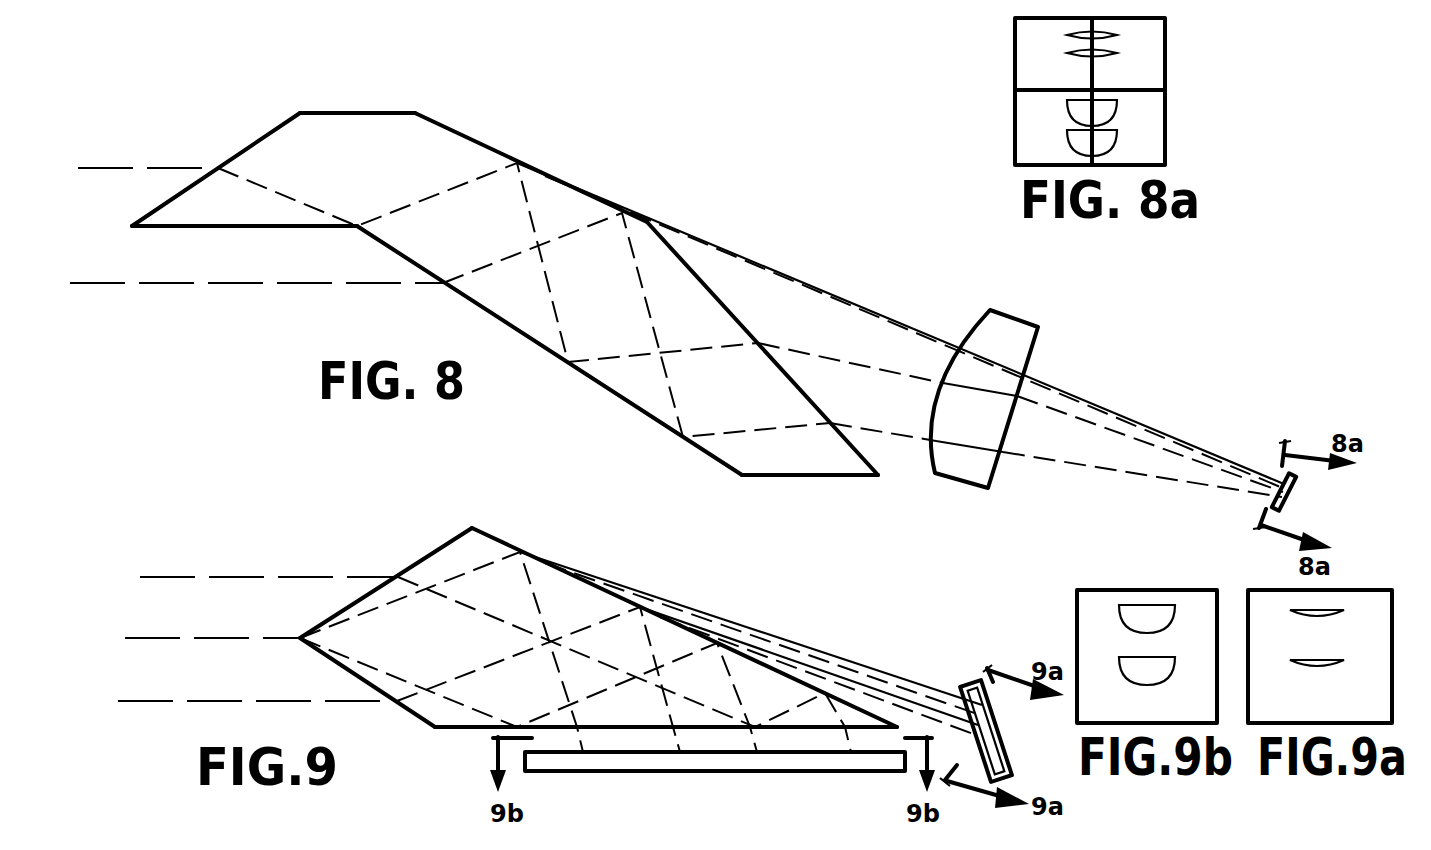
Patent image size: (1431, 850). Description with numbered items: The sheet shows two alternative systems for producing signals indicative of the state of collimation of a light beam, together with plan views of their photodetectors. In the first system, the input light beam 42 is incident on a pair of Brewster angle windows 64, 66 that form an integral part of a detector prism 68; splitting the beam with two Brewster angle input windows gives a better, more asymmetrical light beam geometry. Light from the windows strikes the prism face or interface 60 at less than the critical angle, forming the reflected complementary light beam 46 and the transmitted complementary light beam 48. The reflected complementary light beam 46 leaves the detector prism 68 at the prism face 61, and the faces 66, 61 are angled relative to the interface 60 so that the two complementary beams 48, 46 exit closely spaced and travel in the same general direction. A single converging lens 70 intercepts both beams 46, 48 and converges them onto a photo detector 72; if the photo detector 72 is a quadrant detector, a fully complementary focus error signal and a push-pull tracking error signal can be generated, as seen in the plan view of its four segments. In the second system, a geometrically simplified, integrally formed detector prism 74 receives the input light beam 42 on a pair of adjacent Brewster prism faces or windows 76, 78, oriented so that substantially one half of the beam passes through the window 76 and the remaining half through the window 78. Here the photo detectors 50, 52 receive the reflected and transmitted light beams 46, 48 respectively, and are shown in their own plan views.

In FIG. 8, the input light beam 42 is at (176, 167).
In FIG. 9, the input light beam 42 is at (243, 574).
In FIG. 8, the reflected complementary light beam 46 is at (857, 364).
In FIG. 8, the transmitted complementary light beam 48 is at (822, 273).
In FIG. 9, the photo detector 50 is at (765, 771).
In FIG. 9b, the photo detector 50 is at (1170, 590).
In FIG. 9, the photo detector 52 is at (1000, 735).
In FIG. 9a, the photo detector 52 is at (1350, 590).
In FIG. 8, the prism face or interface 60 is at (490, 148).
In FIG. 8, the prism face 61 is at (812, 403).
In FIG. 8, the Brewster angle window 64 is at (262, 139).
In FIG. 8, the Brewster angle window 66 is at (388, 248).
In FIG. 8, the detector prism 68 is at (449, 164).
In FIG. 8, the converging lens 70 is at (1023, 320).
In FIG. 8, the photo detector 72 is at (1297, 490).
In FIG. 8a, the photo detector 72 is at (1012, 62).
In FIG. 9, the detector prism 74 is at (490, 527).
In FIG. 9, the Brewster prism face or window 76 is at (398, 575).
In FIG. 9, the Brewster prism face or window 78 is at (397, 703).